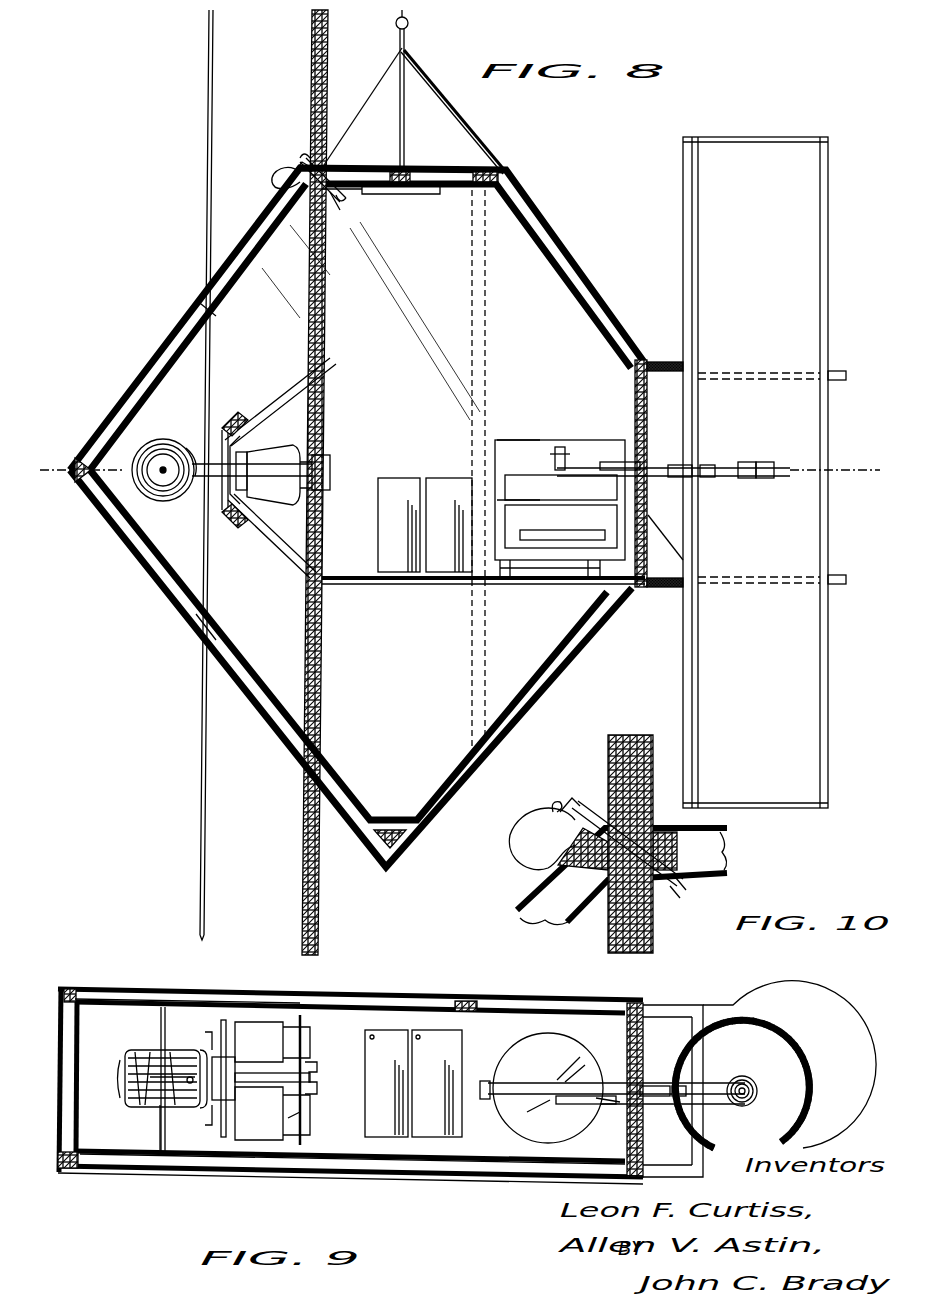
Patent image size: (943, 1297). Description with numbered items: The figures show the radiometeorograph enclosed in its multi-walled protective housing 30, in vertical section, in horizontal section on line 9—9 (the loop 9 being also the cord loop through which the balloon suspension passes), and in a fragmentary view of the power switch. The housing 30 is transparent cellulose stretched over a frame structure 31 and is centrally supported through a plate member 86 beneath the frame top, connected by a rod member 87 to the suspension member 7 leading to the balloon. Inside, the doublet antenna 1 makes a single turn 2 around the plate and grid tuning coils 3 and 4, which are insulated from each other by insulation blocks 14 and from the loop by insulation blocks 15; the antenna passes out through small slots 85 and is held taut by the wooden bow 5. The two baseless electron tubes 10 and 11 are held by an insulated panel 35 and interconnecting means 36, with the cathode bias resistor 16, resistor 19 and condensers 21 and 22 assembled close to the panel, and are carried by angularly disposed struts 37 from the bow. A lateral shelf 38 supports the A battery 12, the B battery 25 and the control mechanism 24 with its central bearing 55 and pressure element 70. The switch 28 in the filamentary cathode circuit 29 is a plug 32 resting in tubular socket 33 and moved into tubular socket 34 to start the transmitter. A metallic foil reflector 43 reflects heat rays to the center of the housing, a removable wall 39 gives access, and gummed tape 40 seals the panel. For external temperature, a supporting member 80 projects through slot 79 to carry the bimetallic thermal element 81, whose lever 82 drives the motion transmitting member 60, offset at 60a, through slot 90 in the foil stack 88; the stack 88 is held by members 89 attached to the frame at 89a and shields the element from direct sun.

In FIG. 8, the doublet antenna 1 is at (203, 181).
In FIG. 9, the doublet antenna 1 is at (165, 1155).
In FIG. 8, the single turn 2 is at (138, 438).
In FIG. 9, the single turn 2 is at (130, 1096).
In FIG. 8, the plate circuit inductance 3 is at (138, 482).
In FIG. 9, the plate circuit inductance 3 is at (140, 1058).
In FIG. 8, the grid circuit inductance 4 is at (148, 500).
In FIG. 9, the grid circuit inductance 4 is at (150, 1110).
In FIG. 8, the wooden bow 5 is at (304, 843).
In FIG. 10, the wooden bow 5 is at (628, 740).
In FIG. 9, the wooden bow 5 is at (313, 1078).
In FIG. 8, the suspension member 7 is at (409, 21).
In FIG. 8, the loop 9 is at (62, 464).
In FIG. 8, the electron tube 10 is at (273, 475).
In FIG. 9, the electron tube 10 is at (262, 1024).
In FIG. 8, the electron tube 11 is at (262, 508).
In FIG. 9, the electron tube 11 is at (270, 1140).
In FIG. 8, the A battery 12 is at (445, 478).
In FIG. 9, the A battery 12 is at (445, 1052).
In FIG. 8, the insulation blocks 14 is at (176, 326).
In FIG. 9, the insulation blocks 14 is at (161, 1008).
In FIG. 8, the insulation blocks 15 is at (160, 505).
In FIG. 9, the insulation blocks 15 is at (140, 1110).
In FIG. 8, the cathode bias resistor 16 is at (250, 420).
In FIG. 9, the cathode bias resistor 16 is at (225, 1020).
In FIG. 8, the resistor 19 is at (228, 512).
In FIG. 8, the condenser 21 is at (248, 418).
In FIG. 9, the condenser 21 is at (222, 1105).
In FIG. 8, the condenser 22 is at (236, 526).
In FIG. 8, the radiometeorograph control mechanism 24 is at (528, 518).
In FIG. 9, the radiometeorograph control mechanism 24 is at (568, 1060).
In FIG. 8, the B battery 25 is at (395, 478).
In FIG. 9, the B battery 25 is at (385, 1030).
In FIG. 8, the switch 28 is at (297, 168).
In FIG. 8, the filamentary cathode circuit 29 is at (338, 206).
In FIG. 10, the filamentary cathode circuit 29 is at (683, 890).
In FIG. 8, the protective housing 30 is at (545, 690).
In FIG. 10, the protective housing 30 is at (520, 910).
In FIG. 8, the frame structure 31 is at (398, 858).
In FIG. 9, the frame structure 31 is at (685, 1005).
In FIG. 8, the plug 32 is at (300, 165).
In FIG. 10, the plug 32 is at (575, 803).
In FIG. 8, the tubular socket 33 is at (280, 182).
In FIG. 10, the tubular socket 33 is at (522, 870).
In FIG. 8, the tubular socket 34 is at (506, 178).
In FIG. 10, the tubular socket 34 is at (594, 795).
In FIG. 8, the insulated panel 35 is at (238, 416).
In FIG. 8, the interconnecting means 36 is at (330, 460).
In FIG. 9, the interconnecting means 36 is at (302, 1018).
In FIG. 8, the struts 37 is at (300, 572).
In FIG. 9, the struts 37 is at (300, 1115).
In FIG. 8, the shelf 38 is at (340, 576).
In FIG. 9, the shelf 38 is at (480, 1163).
In FIG. 9, the wall 39 is at (405, 1178).
In FIG. 9, the gummed tape 40 is at (62, 1176).
In FIG. 8, the metallic foil reflector 43 is at (378, 825).
In FIG. 9, the metallic foil reflector 43 is at (180, 1003).
In FIG. 9, the central bearing 55 is at (218, 1030).
In FIG. 8, the motion transmitting member 60 is at (585, 467).
In FIG. 9, the motion transmitting member 60 is at (706, 1106).
In FIG. 9, the offset 60a is at (614, 1110).
In FIG. 8, the pressure element 70 is at (520, 565).
In FIG. 8, the slot 79 is at (590, 445).
In FIG. 9, the slot 79 is at (600, 1082).
In FIG. 8, the supporting member 80 is at (752, 481).
In FIG. 9, the supporting member 80 is at (655, 1084).
In FIG. 8, the bimetallic thermal element 81 is at (770, 463).
In FIG. 9, the bimetallic thermal element 81 is at (748, 1080).
In FIG. 8, the lever 82 is at (750, 463).
In FIG. 9, the lever 82 is at (754, 1096).
In FIG. 8, the antenna slots 85 is at (200, 630).
In FIG. 8, the plate member 86 is at (430, 195).
In FIG. 8, the rod member 87 is at (404, 131).
In FIG. 8, the stack 88 is at (828, 326).
In FIG. 9, the stack 88 is at (772, 1028).
In FIG. 8, the members 89 is at (846, 580).
In FIG. 9, the members 89 is at (815, 1046).
In FIG. 8, the attachment point 89a is at (652, 590).
In FIG. 8, the slot 90 is at (706, 479).
In FIG. 9, the slot 90 is at (680, 1088).